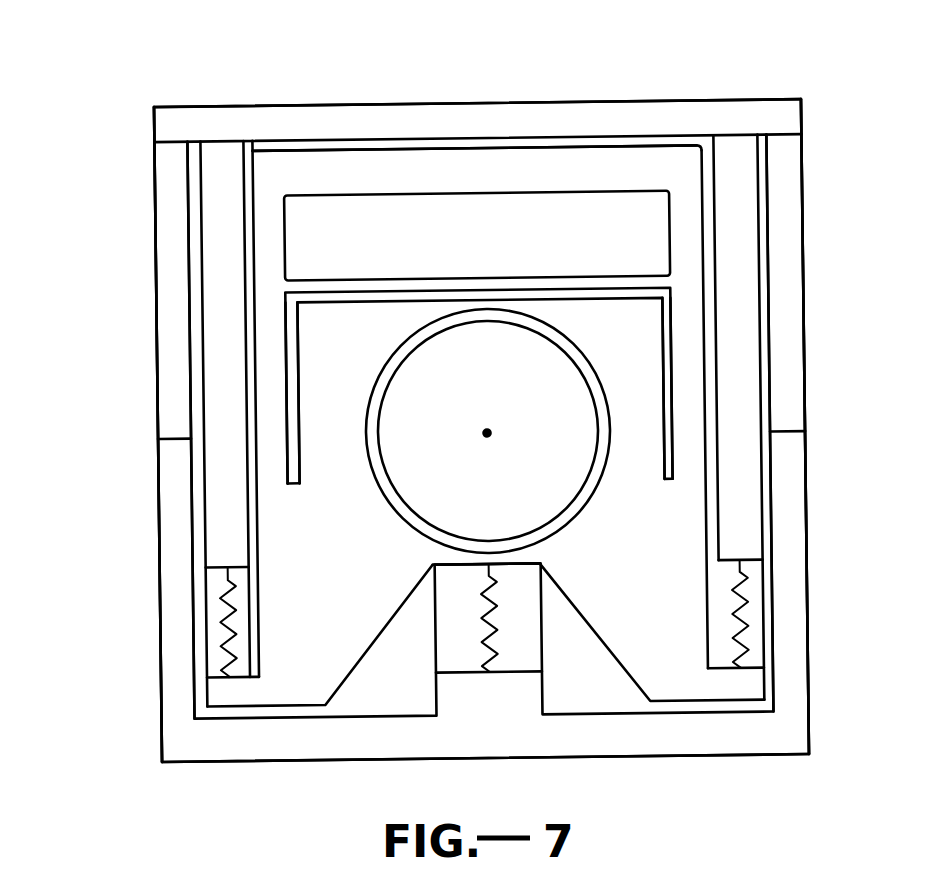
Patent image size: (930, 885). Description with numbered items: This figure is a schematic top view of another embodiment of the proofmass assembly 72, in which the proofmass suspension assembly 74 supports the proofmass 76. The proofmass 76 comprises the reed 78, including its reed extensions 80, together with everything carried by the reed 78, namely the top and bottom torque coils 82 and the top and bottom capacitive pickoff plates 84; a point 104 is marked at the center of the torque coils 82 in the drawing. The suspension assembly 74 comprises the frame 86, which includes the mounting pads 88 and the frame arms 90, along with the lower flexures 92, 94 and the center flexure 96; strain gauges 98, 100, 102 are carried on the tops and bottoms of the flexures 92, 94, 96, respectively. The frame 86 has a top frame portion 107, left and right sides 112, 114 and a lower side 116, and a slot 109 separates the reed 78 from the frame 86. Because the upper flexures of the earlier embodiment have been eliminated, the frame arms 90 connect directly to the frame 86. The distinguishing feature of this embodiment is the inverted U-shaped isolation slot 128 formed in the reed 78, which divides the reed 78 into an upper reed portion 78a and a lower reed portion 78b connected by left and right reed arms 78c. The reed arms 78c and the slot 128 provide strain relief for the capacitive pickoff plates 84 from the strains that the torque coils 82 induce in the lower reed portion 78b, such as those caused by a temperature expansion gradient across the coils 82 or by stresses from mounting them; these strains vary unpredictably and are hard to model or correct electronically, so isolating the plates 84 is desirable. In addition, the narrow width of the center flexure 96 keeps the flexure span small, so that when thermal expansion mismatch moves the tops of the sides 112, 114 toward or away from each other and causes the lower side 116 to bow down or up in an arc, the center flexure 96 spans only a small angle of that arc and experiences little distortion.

The proofmass assembly 72 is at (175, 32).
The proofmass suspension assembly 74 is at (137, 77).
The proofmass 76 is at (113, 125).
The reed 78 is at (128, 404).
The upper reed portion 78a is at (358, 184).
The lower reed portion 78b is at (360, 570).
The reed arms 78c is at (273, 393).
The reed extensions 80 is at (228, 702).
The torque coils 82 is at (567, 517).
The capacitive pickoff plates 84 is at (587, 208).
The frame 86 is at (681, 60).
The mounting pads 88 is at (163, 262).
The frame arms 90 is at (215, 335).
The lower flexure 92 is at (210, 625).
The lower flexure 94 is at (765, 592).
The center flexure 96 is at (545, 647).
The strain gauge 98 is at (223, 647).
The strain gauge 100 is at (470, 638).
The strain gauge 102 is at (740, 628).
The axis 104 is at (487, 433).
The top frame portion 107 is at (570, 120).
The slot 109 is at (462, 143).
The left side of frame 112 is at (165, 523).
The right side of frame 114 is at (792, 505).
The lower side of frame 116 is at (605, 750).
The isolation slot 128 is at (572, 300).